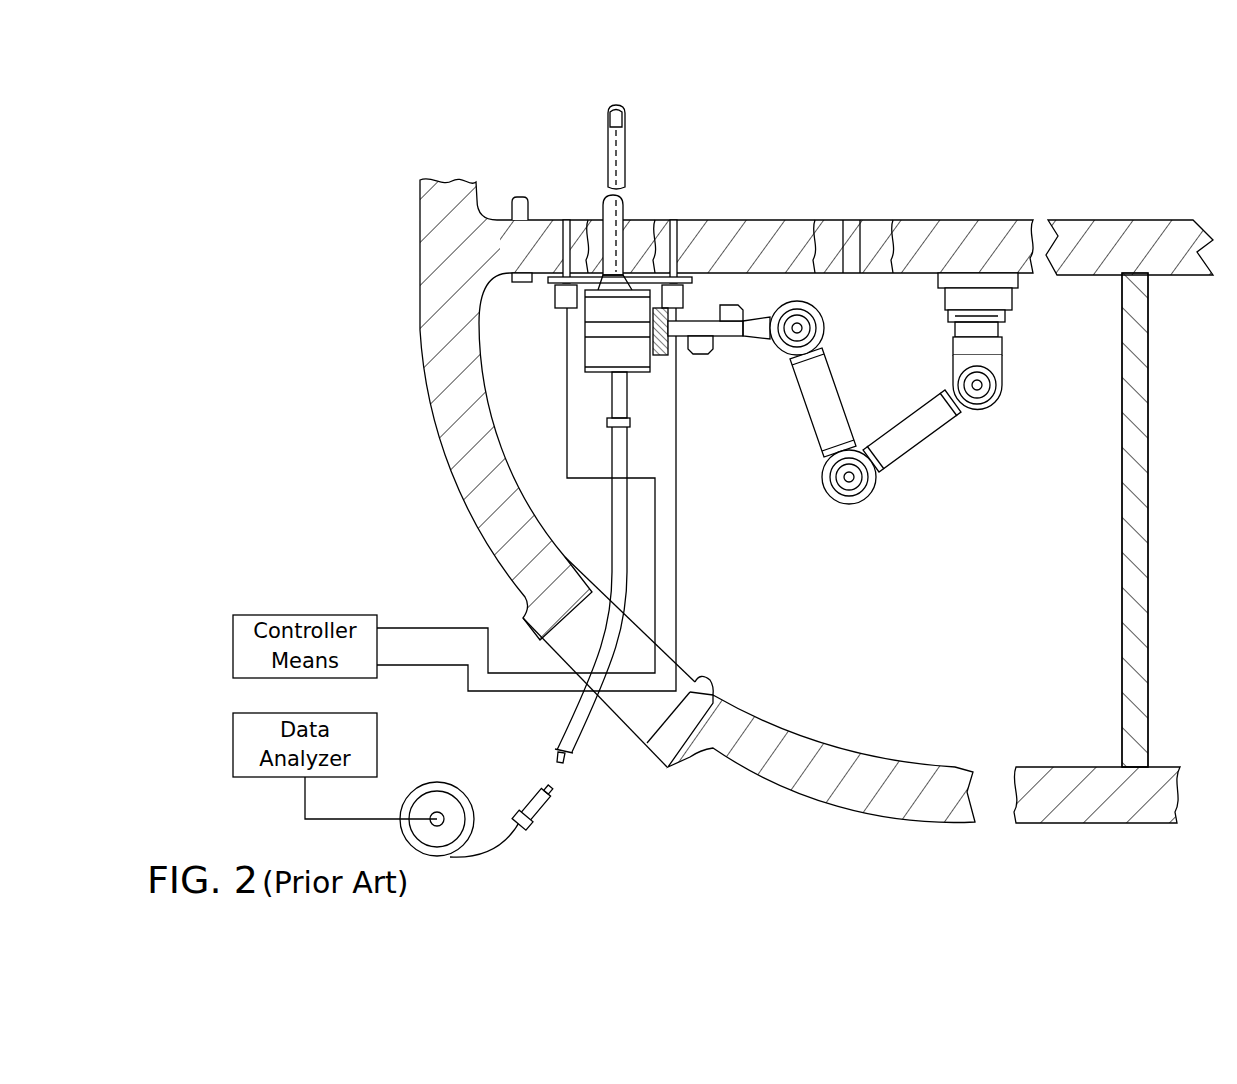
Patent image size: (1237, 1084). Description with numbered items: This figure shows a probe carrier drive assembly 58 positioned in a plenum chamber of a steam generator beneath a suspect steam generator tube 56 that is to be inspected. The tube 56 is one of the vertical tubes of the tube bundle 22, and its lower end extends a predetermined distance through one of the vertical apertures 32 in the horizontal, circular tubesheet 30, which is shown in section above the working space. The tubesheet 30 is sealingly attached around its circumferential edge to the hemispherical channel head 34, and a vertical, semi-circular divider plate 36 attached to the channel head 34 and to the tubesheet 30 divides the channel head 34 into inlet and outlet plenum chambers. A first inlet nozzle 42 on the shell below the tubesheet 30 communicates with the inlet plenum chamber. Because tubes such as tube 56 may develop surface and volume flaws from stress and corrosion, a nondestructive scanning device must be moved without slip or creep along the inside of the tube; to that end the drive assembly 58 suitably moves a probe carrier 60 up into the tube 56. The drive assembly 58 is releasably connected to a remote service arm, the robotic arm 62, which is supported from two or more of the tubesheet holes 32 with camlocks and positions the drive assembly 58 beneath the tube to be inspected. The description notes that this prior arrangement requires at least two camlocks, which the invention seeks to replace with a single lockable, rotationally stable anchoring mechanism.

The tube bundle 22 is at (516, 197).
The tubesheet 30 is at (1083, 233).
The apertures 32 is at (853, 220).
The channel head 34 is at (1097, 353).
The divider plate 36 is at (1143, 487).
The first inlet nozzle 42 is at (693, 682).
The steam generator tube 56 is at (605, 146).
The probe carrier drive assembly 58 is at (583, 341).
The probe carrier 60 is at (627, 207).
The robotic arm 62 is at (952, 438).